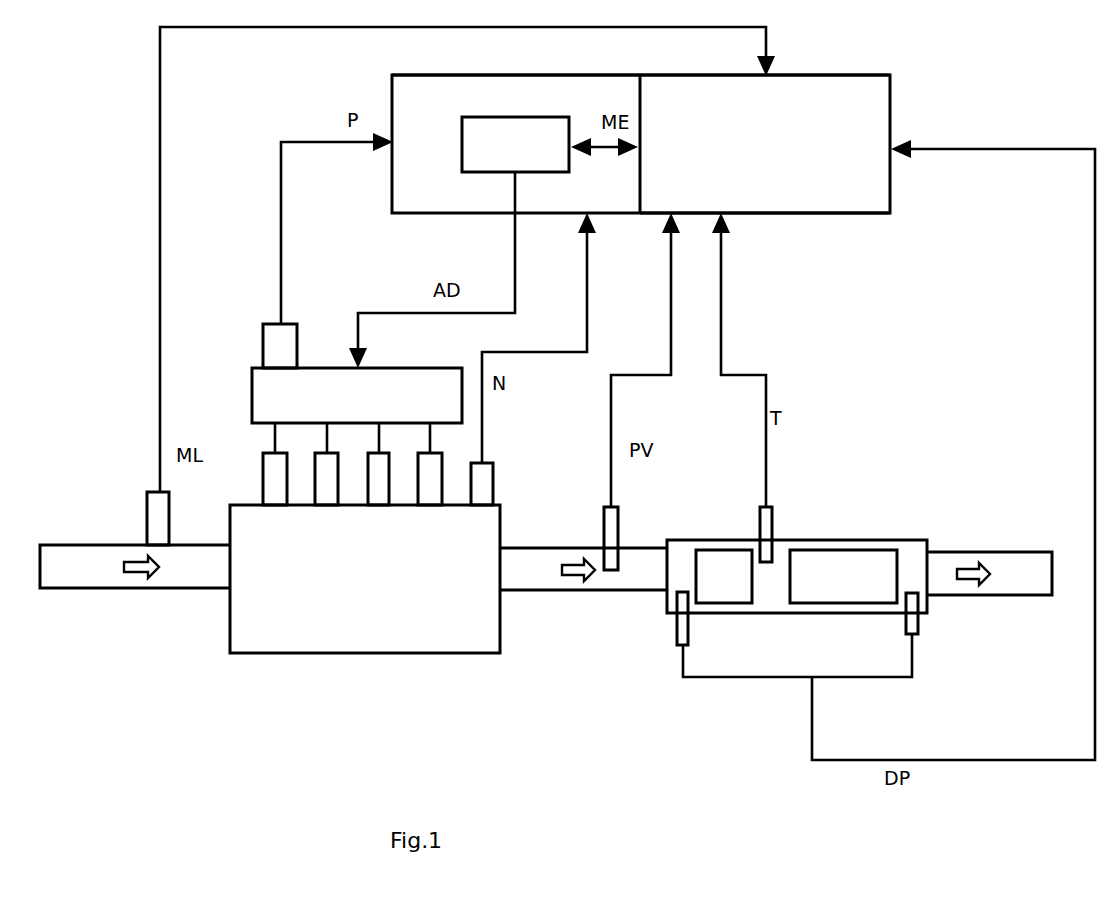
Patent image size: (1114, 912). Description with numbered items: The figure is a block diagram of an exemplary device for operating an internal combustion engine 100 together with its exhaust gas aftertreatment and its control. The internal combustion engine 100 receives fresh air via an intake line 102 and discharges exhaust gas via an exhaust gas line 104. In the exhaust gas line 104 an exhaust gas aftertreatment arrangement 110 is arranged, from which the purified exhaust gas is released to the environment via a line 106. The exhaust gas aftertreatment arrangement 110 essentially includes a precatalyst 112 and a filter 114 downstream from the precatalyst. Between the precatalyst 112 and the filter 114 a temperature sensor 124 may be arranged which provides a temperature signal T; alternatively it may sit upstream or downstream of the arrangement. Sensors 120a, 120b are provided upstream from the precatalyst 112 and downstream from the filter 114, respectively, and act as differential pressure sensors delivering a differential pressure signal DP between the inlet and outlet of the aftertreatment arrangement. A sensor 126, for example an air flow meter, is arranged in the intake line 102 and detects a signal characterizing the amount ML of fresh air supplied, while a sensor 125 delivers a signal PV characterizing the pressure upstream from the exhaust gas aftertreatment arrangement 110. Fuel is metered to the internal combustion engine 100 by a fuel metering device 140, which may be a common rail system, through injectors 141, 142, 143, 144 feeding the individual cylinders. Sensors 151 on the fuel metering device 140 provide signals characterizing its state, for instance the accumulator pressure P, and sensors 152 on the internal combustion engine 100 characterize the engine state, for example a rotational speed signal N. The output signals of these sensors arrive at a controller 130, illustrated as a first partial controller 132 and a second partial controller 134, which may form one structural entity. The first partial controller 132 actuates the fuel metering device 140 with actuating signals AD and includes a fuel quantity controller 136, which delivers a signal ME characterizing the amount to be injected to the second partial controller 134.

The internal combustion engine 100 is at (365, 579).
The intake line 102 is at (135, 589).
The exhaust gas line 104 is at (583, 596).
The line 106 is at (989, 589).
The exhaust gas aftertreatment arrangement 110 is at (797, 562).
The precatalyst 112 is at (724, 576).
The filter 114 is at (843, 576).
The sensor 120a is at (711, 624).
The sensor 120b is at (887, 624).
The temperature sensor 124 is at (789, 524).
The sensor 125 is at (638, 534).
The sensor 126 is at (132, 518).
The controller 130 is at (641, 125).
The first partial controller 132 is at (516, 144).
The second partial controller 134 is at (765, 144).
The fuel quantity controller 136 is at (515, 144).
The fuel metering device 140 is at (357, 395).
The injector 141 is at (275, 464).
The injector 142 is at (326, 464).
The injector 143 is at (378, 464).
The injector 144 is at (430, 464).
The sensors 151 is at (255, 346).
The sensors 152 is at (505, 484).